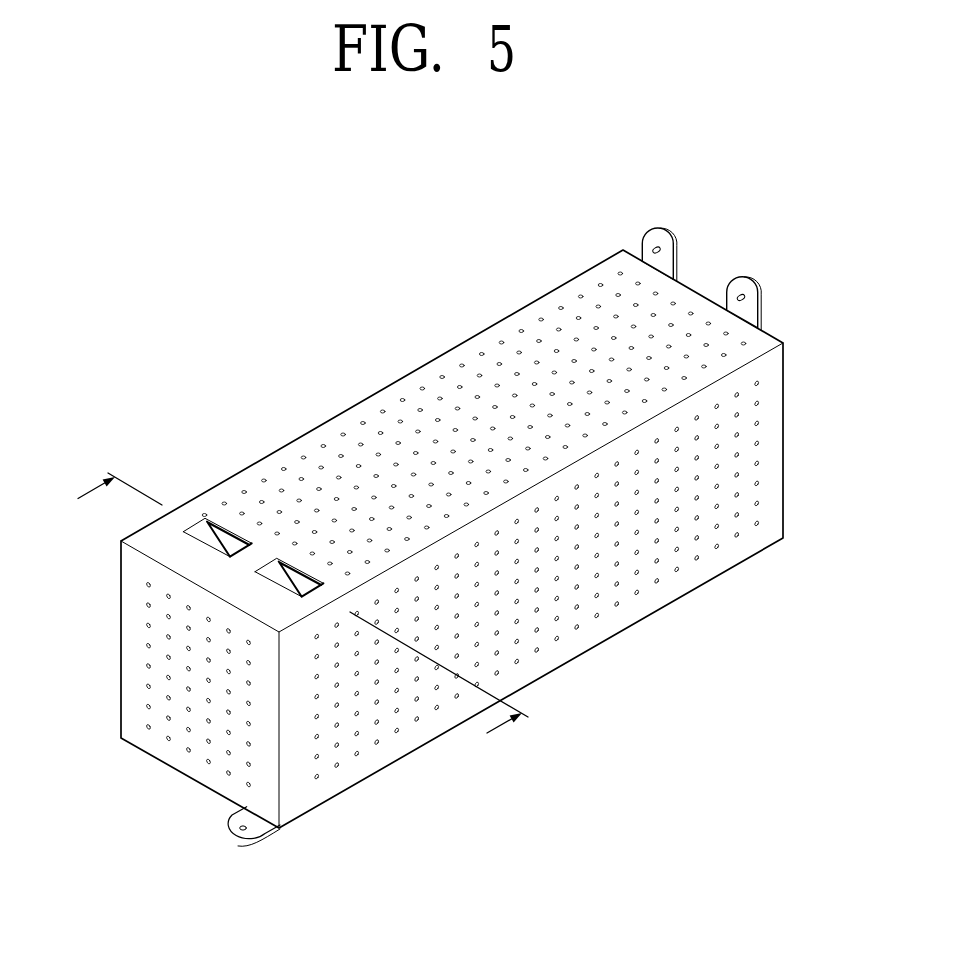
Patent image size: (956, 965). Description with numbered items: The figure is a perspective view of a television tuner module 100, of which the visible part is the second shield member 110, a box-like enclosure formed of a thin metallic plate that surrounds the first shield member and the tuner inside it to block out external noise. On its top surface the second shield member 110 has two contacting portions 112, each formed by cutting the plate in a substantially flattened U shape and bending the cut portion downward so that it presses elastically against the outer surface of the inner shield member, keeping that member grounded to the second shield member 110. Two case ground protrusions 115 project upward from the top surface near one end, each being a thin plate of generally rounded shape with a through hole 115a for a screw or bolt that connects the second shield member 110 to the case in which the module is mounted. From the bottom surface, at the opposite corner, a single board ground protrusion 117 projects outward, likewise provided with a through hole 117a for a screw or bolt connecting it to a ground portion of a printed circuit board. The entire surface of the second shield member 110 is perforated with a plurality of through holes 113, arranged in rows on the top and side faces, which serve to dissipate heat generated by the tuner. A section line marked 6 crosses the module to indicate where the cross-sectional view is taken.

The television tuner module 100 is at (272, 267).
The second shield member 110 is at (496, 311).
The contacting portion 112 is at (276, 577).
The through holes 113 is at (381, 431).
The case ground protrusion 115 is at (739, 280).
The through hole 115a is at (748, 299).
The board ground protrusion 117 is at (234, 842).
The through hole 117a is at (239, 828).
The section line 6- 6 is at (294, 613).